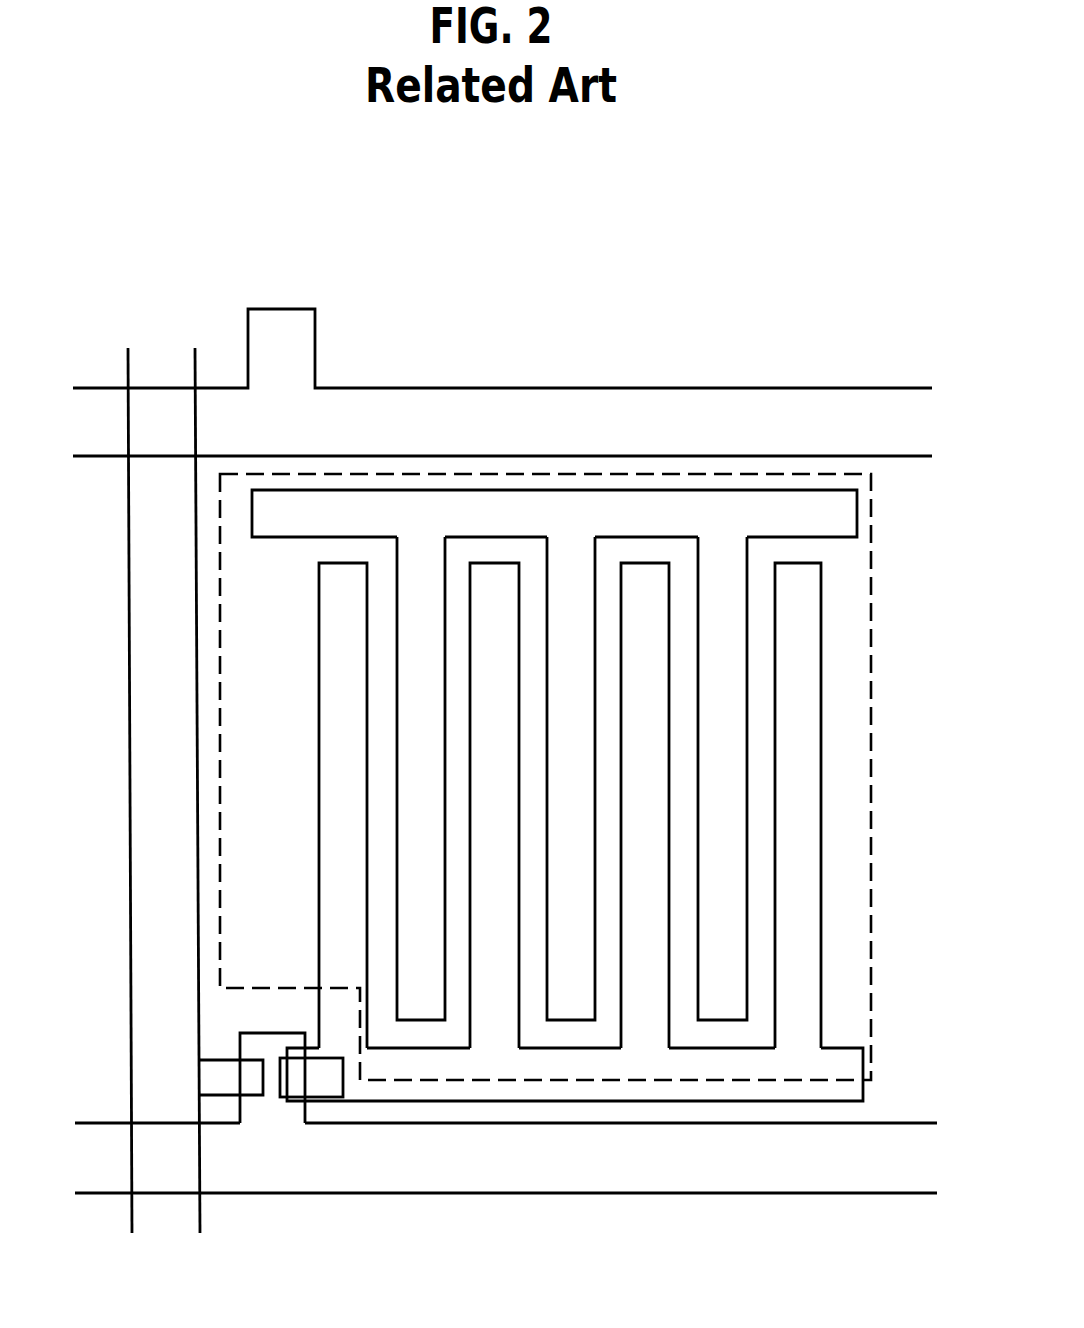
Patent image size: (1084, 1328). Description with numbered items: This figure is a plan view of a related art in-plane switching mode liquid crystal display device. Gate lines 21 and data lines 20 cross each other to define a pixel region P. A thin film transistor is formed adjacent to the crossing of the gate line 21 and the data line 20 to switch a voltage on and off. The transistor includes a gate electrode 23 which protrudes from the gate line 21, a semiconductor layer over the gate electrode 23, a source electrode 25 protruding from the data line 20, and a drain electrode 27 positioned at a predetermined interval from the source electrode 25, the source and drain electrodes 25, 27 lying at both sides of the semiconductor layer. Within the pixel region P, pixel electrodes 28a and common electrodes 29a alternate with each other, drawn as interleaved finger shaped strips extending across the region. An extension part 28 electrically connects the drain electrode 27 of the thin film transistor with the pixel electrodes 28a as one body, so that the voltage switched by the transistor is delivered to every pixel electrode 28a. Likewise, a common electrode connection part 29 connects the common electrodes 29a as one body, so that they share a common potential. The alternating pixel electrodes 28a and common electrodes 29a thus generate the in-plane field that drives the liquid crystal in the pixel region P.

The data line 20 is at (143, 677).
The gate line 21 is at (105, 443).
The gate electrode 23 is at (293, 1110).
The source electrode 25 is at (229, 1088).
The drain electrode 27 is at (298, 1082).
The extension part 28 is at (853, 1065).
The pixel electrode 28a is at (810, 725).
The common electrode connection part 29 is at (845, 515).
The common electrode 29a is at (737, 780).
The pixel region P is at (870, 638).